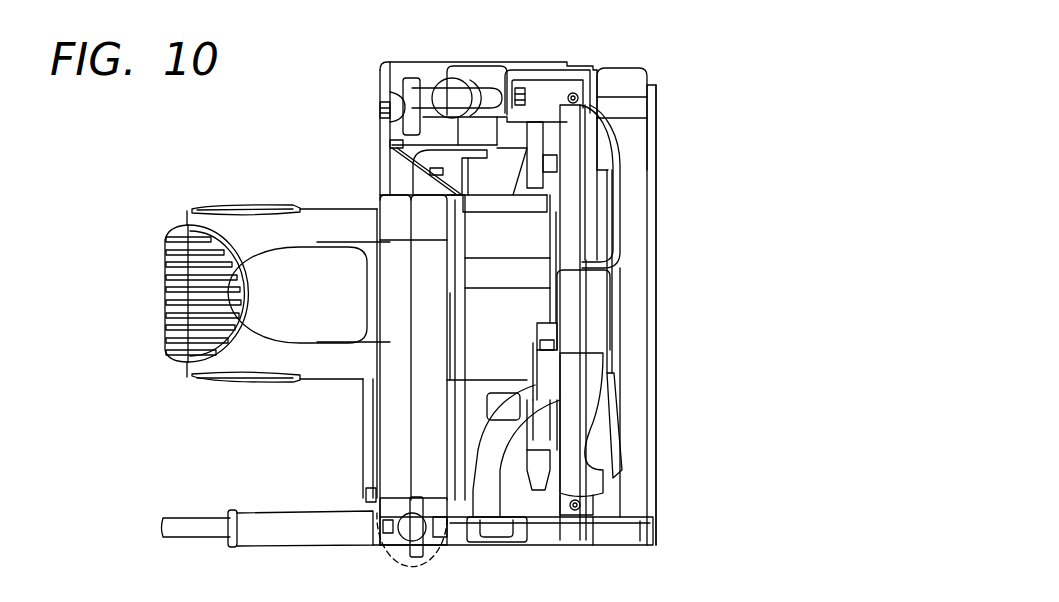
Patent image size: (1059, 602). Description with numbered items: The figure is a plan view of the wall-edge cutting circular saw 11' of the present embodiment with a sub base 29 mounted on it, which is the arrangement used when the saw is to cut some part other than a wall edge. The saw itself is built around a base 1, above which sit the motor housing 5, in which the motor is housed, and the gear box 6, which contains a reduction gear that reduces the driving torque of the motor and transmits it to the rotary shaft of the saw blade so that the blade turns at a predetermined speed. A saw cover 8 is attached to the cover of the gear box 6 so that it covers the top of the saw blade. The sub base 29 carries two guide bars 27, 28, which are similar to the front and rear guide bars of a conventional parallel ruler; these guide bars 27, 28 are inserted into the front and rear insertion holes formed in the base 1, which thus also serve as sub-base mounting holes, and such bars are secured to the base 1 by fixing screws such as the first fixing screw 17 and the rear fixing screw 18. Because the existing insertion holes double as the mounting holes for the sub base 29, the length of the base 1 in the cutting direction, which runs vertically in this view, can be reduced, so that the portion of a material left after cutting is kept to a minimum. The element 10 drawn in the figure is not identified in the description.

The base 1 is at (423, 68).
The motor housing 5 is at (329, 221).
The gear box 6 is at (510, 350).
The saw cover 8 is at (598, 288).
The gear housing 10 is at (387, 437).
The wall-edge cutting circular saw 11' is at (724, 289).
The first fixing screw 17 is at (410, 125).
The rear fixing screw 18 is at (410, 545).
The guide bar 27 is at (627, 103).
The guide bar 28 is at (538, 530).
The sub base 29 is at (637, 353).